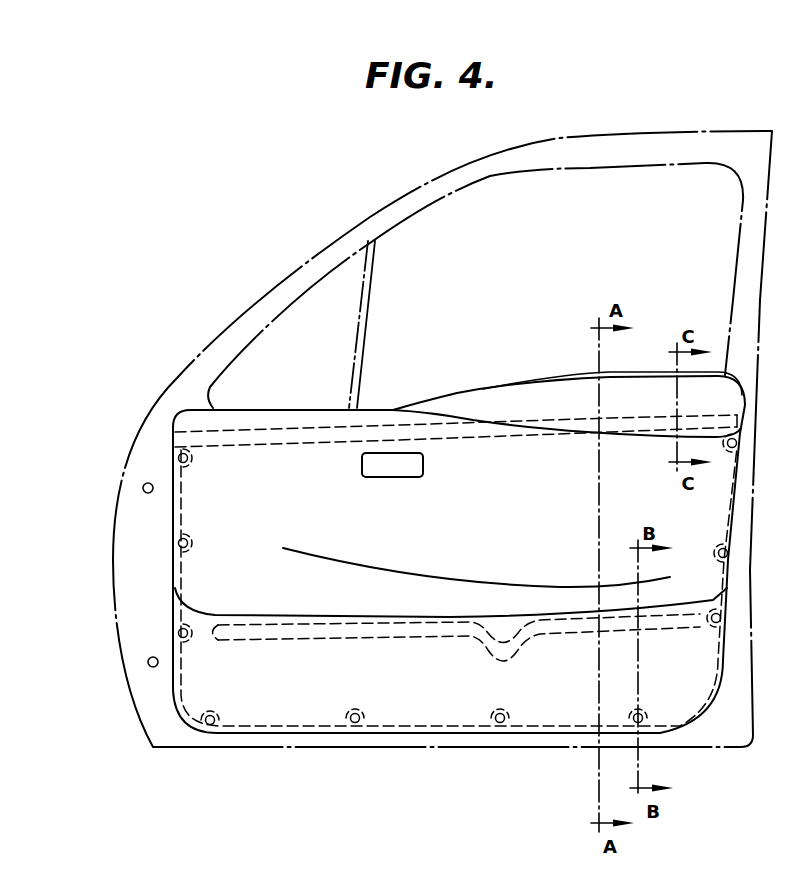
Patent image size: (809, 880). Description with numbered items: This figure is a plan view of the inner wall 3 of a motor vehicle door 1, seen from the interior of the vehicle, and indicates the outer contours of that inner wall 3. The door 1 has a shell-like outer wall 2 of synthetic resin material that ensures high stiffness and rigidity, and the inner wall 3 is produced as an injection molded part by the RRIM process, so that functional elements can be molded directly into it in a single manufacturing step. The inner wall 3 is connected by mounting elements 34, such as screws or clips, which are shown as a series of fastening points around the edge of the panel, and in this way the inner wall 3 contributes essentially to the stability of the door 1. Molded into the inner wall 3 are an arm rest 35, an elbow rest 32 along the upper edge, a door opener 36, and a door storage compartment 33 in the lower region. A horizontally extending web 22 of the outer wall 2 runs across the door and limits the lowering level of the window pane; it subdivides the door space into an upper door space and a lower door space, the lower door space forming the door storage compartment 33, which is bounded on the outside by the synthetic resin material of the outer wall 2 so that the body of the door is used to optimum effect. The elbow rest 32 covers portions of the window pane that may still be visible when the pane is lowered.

The vehicle door 1 is at (284, 274).
The outer wall 2 is at (128, 588).
The inner wall 3 is at (207, 727).
The web 22 is at (352, 633).
The elbow rest 32 is at (528, 398).
The door storage compartment 33 is at (307, 708).
The mounting elements 34 is at (495, 724).
The arm rest 35 is at (462, 583).
The door opener 36 is at (418, 470).